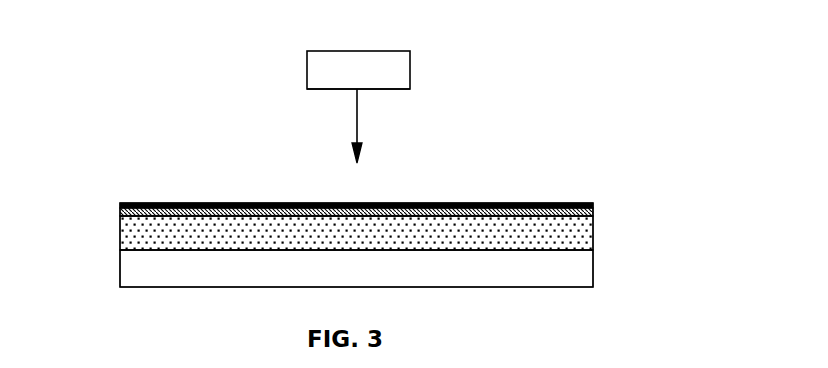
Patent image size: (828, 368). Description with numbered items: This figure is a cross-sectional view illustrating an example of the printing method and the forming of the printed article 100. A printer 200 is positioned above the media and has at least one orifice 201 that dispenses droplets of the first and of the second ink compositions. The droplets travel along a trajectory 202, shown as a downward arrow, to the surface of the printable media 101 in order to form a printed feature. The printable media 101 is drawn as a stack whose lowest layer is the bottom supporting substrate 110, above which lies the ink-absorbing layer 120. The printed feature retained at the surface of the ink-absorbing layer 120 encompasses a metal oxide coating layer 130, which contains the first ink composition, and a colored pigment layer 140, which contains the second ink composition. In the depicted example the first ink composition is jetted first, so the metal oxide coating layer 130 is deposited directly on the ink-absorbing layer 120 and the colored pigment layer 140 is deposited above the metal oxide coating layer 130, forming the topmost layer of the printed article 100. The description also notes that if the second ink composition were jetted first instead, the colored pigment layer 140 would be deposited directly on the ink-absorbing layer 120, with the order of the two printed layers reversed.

The printed article 100 is at (536, 163).
The printable media 101 is at (647, 222).
The bottom supporting substrate 110 is at (594, 261).
The ink-absorbing layer 120 is at (594, 241).
The metal oxide coating layer 130 is at (119, 215).
The colored pigment layer 140 is at (118, 207).
The printer 200 is at (413, 59).
The orifice 201 is at (332, 89).
The trajectory 202 is at (358, 137).